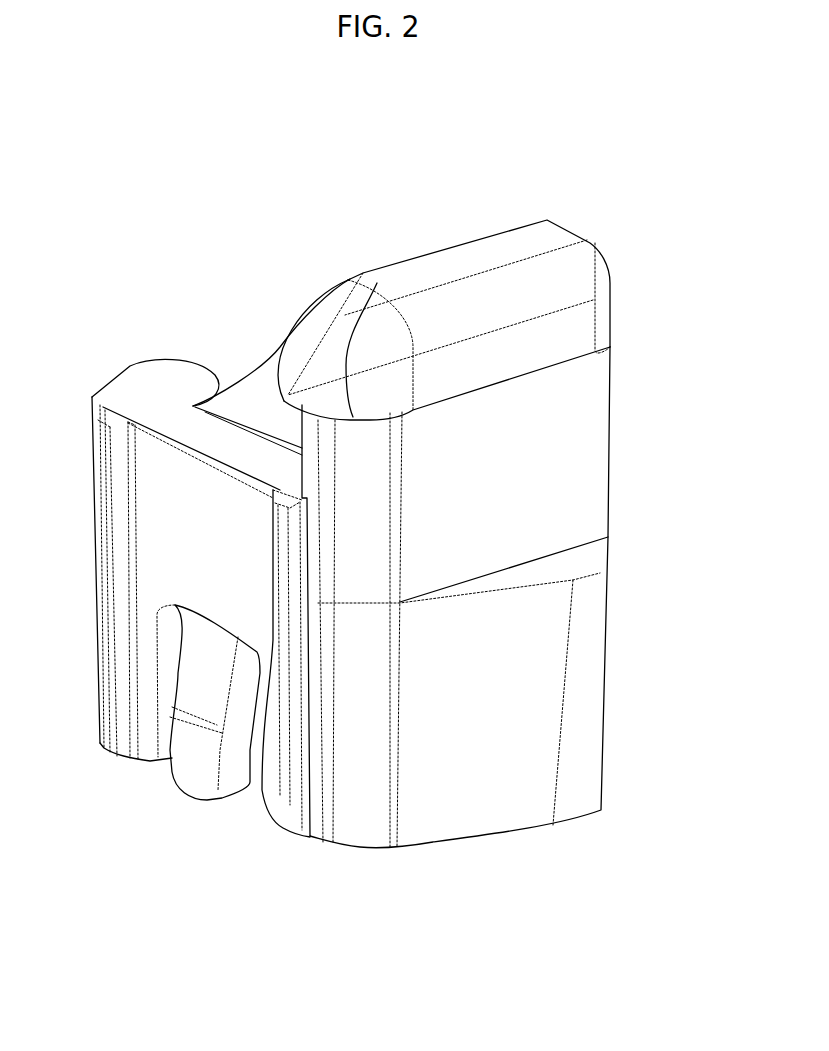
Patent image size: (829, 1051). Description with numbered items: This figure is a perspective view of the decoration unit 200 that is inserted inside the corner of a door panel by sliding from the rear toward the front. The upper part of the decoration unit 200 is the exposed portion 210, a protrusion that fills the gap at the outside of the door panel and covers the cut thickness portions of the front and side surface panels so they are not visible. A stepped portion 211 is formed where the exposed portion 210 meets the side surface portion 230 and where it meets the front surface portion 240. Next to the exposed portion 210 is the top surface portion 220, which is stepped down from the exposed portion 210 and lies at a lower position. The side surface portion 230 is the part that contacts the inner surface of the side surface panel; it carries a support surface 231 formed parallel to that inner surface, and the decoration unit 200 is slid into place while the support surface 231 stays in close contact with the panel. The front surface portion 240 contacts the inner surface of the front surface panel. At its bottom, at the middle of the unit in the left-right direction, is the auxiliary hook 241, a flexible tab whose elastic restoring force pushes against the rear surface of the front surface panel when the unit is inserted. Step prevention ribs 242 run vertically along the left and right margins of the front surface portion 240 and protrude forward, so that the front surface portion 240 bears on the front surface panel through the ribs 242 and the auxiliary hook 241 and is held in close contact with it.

The decoration unit 200 is at (302, 205).
The exposed portion 210 is at (450, 270).
The stepped portion 211 is at (377, 283).
The top surface portion 220 is at (155, 376).
The side surface portion 230 is at (592, 462).
The support surface 231 is at (580, 412).
The front surface portion 240 is at (167, 495).
The auxiliary hook 241 is at (199, 757).
The step prevention ribs 242 is at (137, 755).